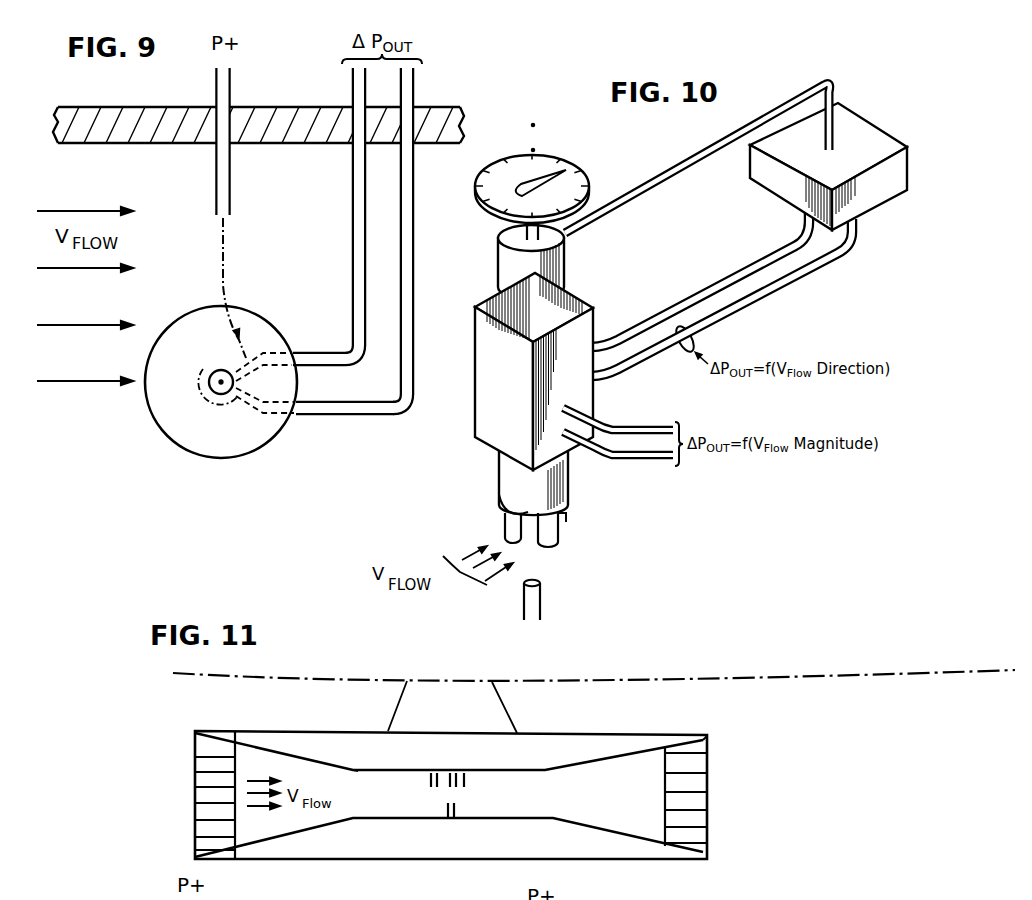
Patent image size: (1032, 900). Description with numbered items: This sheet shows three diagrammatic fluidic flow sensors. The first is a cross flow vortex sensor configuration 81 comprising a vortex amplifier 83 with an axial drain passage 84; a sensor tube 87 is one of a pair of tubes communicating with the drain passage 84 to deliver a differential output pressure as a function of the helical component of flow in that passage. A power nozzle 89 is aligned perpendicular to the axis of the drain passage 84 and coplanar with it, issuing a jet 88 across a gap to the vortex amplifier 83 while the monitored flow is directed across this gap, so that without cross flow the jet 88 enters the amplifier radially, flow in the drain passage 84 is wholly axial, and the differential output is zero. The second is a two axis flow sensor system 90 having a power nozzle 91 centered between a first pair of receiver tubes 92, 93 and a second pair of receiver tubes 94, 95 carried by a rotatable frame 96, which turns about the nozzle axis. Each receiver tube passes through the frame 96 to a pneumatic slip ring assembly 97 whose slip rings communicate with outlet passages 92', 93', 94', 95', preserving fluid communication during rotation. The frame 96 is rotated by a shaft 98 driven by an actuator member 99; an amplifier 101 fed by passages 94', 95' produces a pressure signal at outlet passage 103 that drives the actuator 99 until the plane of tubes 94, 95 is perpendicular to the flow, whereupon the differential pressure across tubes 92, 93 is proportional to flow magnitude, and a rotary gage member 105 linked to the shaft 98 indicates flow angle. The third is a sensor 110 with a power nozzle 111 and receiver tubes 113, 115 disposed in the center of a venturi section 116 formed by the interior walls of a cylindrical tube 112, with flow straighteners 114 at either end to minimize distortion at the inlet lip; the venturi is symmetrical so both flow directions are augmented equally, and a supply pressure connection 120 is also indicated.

In FIG. 9, the cross flow vortex sensor configuration 81 is at (378, 425).
In FIG. 9, the vortex amplifier 83 is at (160, 430).
In FIG. 9, the axial drain passage 84 is at (205, 376).
In FIG. 9, the sensor tube 87 is at (325, 414).
In FIG. 9, the jet 88 is at (223, 273).
In FIG. 9, the power nozzle 89 is at (230, 184).
In FIG. 10, the two axis flow sensor system 90 is at (636, 505).
In FIG. 10, the power nozzle 91 is at (538, 605).
In FIG. 10, the receiver tube 92 is at (489, 519).
In FIG. 10, the receiver tube 93 is at (585, 501).
In FIG. 10, the receiver tube 94 is at (492, 491).
In FIG. 10, the receiver tube 95 is at (576, 535).
In FIG. 10, the rotatable frame 96 is at (510, 468).
In FIG. 10, the pneumatic slip ring assembly 97 is at (477, 368).
In FIG. 10, the shaft 98 is at (525, 300).
In FIG. 10, the actuator member 99 is at (567, 268).
In FIG. 10, the amplifier 101 is at (784, 157).
In FIG. 10, the outlet passage 103 is at (793, 100).
In FIG. 10, the rotary gage member 105 is at (566, 160).
In FIG. 10, the outlet passage 92' is at (618, 413).
In FIG. 10, the outlet passage 93' is at (618, 460).
In FIG. 10, the outlet passage 94' is at (686, 283).
In FIG. 10, the outlet passage 95' is at (707, 311).
In FIG. 11, the sensor 110 is at (683, 870).
In FIG. 11, the power nozzle 111 is at (456, 815).
In FIG. 11, the cylindrical tube 112 is at (700, 733).
In FIG. 11, the receiver tube 113 is at (470, 775).
In FIG. 11, the flow straighteners 114 is at (207, 767).
In FIG. 11, the receiver tube 115 is at (430, 775).
In FIG. 11, the venturi section 116 is at (365, 782).
In FIG. 11, the supply pressure port 120 is at (588, 897).